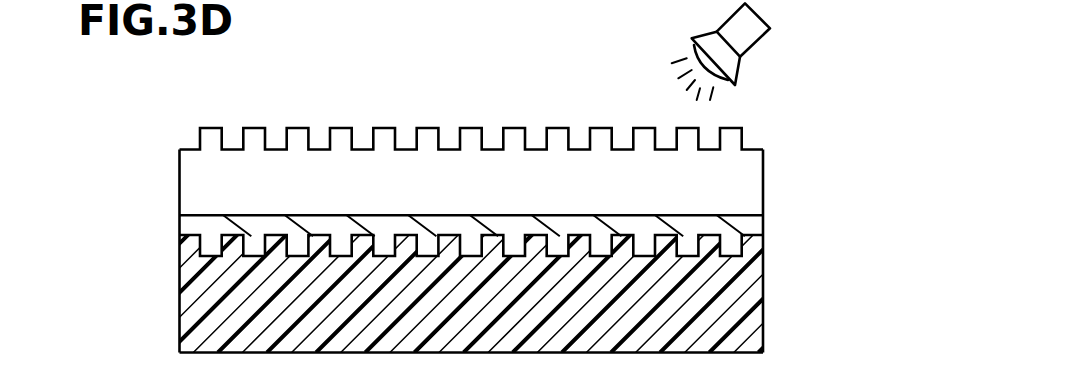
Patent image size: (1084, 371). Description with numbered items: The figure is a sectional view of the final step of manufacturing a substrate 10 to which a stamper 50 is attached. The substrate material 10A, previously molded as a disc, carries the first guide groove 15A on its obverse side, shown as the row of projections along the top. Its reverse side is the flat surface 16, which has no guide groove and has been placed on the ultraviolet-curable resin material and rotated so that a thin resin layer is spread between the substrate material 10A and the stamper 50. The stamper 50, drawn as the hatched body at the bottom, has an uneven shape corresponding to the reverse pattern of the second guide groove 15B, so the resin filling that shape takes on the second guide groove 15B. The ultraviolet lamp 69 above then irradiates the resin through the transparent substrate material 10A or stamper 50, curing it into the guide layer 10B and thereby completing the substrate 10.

The substrate 10 is at (530, 211).
The substrate material 10A is at (516, 140).
The guide layer 10B is at (506, 247).
The first guide groove 15A is at (581, 147).
The second guide groove 15B is at (271, 237).
The flat surface 16 is at (203, 216).
The stamper 50 is at (752, 287).
The ultraviolet lamp 69 is at (757, 37).